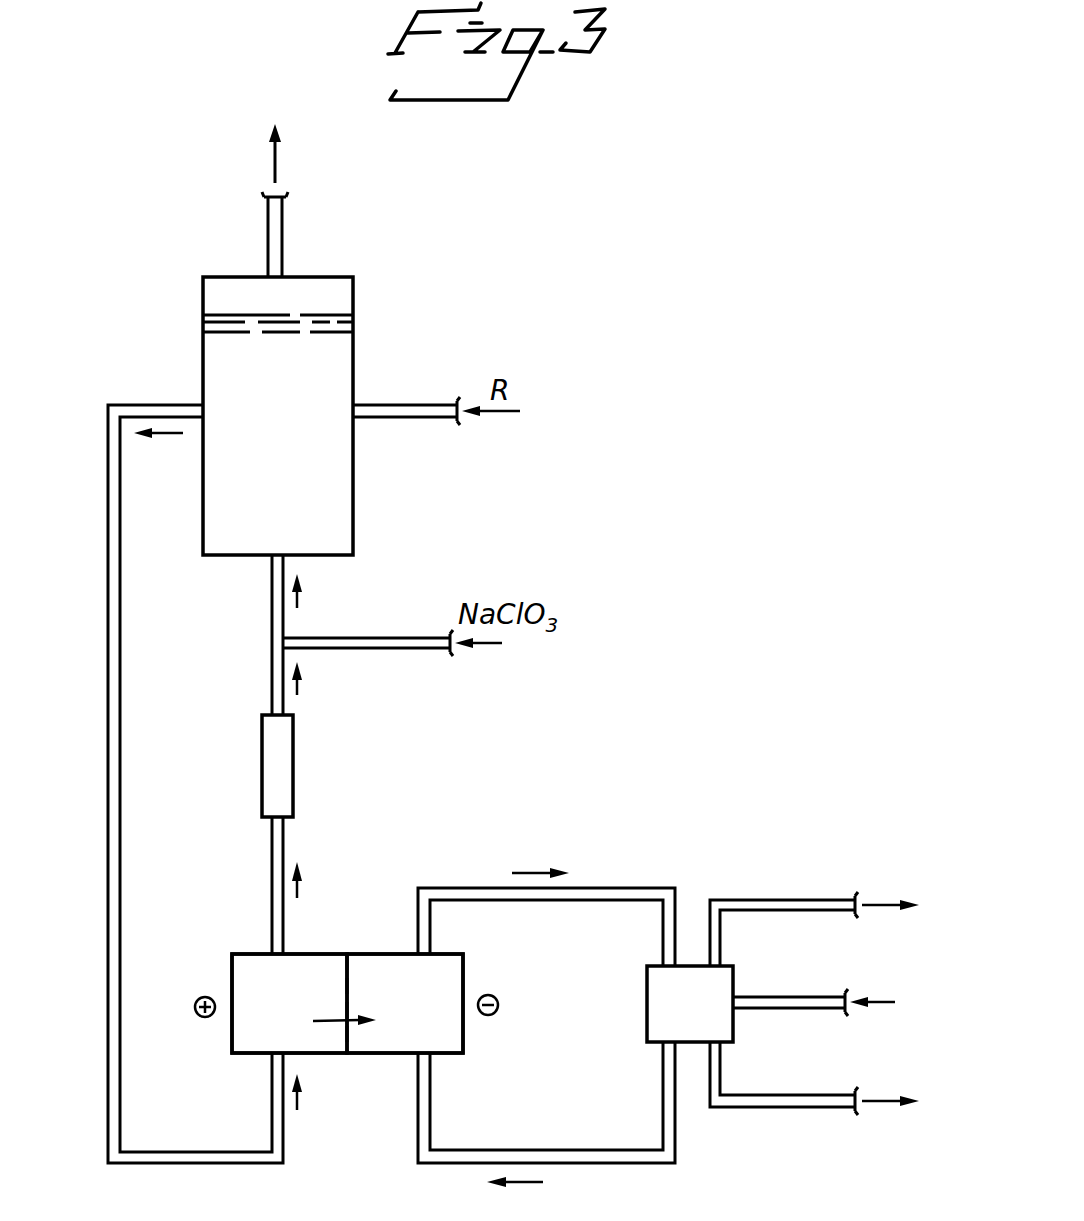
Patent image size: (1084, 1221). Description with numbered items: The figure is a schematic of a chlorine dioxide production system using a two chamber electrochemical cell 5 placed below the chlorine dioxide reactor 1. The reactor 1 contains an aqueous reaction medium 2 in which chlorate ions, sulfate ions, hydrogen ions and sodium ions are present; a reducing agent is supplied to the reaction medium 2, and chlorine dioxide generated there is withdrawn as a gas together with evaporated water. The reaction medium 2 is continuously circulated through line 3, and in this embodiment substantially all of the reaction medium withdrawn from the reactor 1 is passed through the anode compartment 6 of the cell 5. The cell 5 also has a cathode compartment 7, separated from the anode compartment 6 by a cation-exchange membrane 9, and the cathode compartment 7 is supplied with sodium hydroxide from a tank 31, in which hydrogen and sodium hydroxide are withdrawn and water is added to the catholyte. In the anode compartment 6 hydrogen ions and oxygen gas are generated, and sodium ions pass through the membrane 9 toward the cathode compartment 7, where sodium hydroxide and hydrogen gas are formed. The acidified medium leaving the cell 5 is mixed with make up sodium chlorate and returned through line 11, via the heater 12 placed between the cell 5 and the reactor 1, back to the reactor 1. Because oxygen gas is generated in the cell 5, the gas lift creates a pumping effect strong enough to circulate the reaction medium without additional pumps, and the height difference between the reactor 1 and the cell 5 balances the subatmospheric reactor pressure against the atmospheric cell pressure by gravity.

The reactor 1 is at (354, 289).
The reaction medium 2 is at (340, 470).
The line 3 is at (120, 506).
The electrochemical cell 5 is at (361, 953).
The anode compartment 6 is at (251, 965).
The cathode compartment 7 is at (445, 967).
The cation-exchange membrane 9 is at (348, 1038).
The line 11 is at (272, 856).
The heater 12 is at (294, 742).
The tank 31 is at (734, 967).